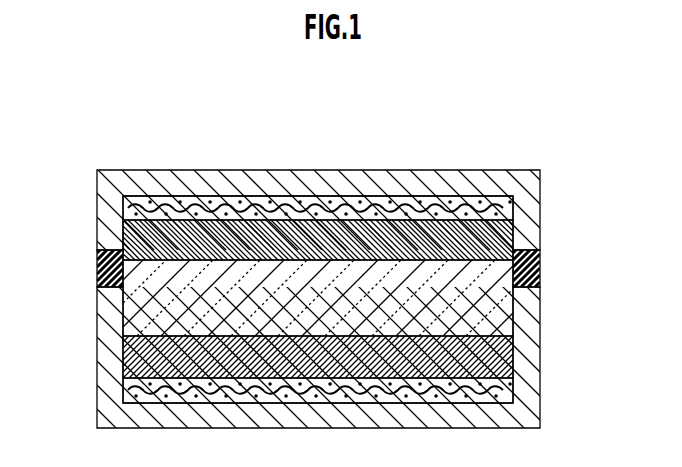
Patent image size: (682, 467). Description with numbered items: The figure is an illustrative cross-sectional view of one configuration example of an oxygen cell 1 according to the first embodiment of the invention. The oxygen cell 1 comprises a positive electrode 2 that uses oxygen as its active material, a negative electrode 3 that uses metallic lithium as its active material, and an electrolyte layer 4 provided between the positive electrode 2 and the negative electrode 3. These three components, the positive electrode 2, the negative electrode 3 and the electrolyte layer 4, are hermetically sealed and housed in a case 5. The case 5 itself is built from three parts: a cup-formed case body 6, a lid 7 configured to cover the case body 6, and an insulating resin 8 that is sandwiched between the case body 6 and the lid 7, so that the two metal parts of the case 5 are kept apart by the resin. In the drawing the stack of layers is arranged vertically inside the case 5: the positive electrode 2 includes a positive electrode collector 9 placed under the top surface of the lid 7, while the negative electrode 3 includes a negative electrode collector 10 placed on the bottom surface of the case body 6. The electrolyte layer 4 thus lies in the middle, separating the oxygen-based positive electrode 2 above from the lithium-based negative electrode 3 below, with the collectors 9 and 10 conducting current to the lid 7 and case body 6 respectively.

The oxygen cell 1 is at (582, 135).
The positive electrode 2 is at (507, 225).
The negative electrode 3 is at (510, 357).
The electrolyte layer 4 is at (503, 312).
The case 5 is at (52, 215).
The case body 6 is at (97, 307).
The lid 7 is at (97, 226).
The insulating resin 8 is at (97, 267).
The positive electrode collector 9 is at (503, 203).
The negative electrode collector 10 is at (503, 388).